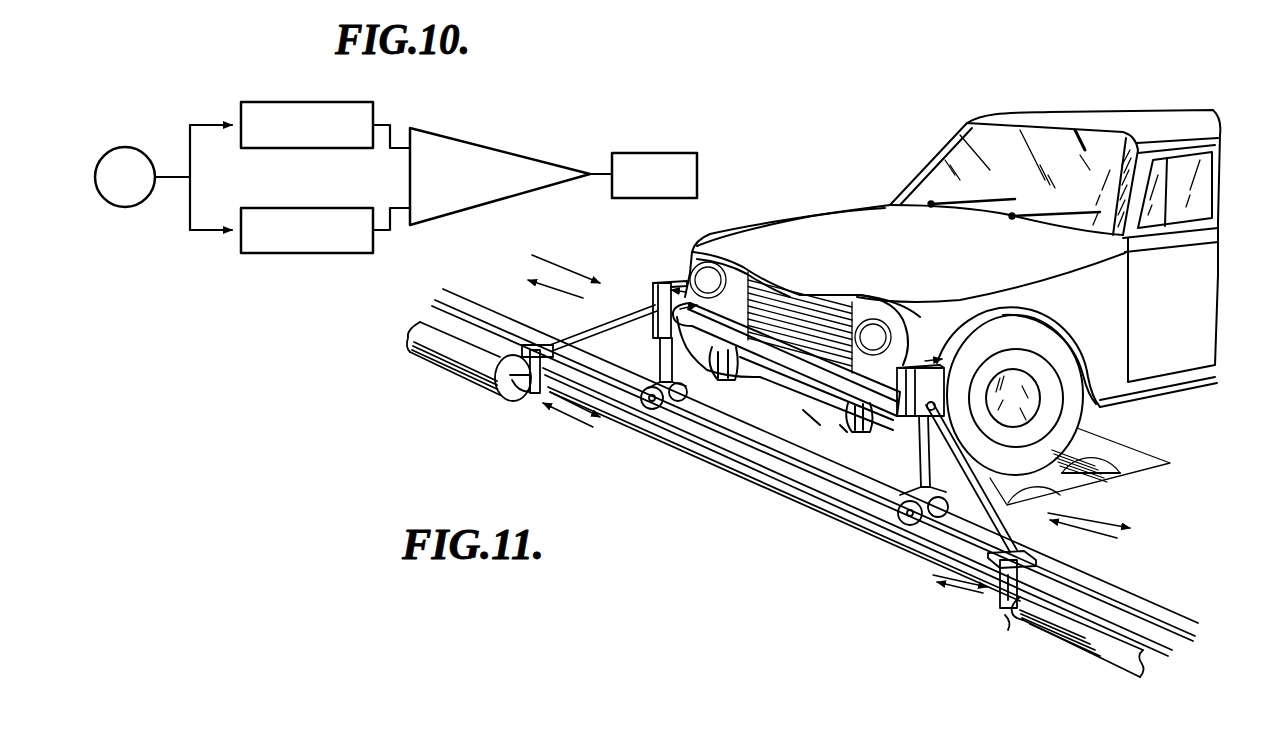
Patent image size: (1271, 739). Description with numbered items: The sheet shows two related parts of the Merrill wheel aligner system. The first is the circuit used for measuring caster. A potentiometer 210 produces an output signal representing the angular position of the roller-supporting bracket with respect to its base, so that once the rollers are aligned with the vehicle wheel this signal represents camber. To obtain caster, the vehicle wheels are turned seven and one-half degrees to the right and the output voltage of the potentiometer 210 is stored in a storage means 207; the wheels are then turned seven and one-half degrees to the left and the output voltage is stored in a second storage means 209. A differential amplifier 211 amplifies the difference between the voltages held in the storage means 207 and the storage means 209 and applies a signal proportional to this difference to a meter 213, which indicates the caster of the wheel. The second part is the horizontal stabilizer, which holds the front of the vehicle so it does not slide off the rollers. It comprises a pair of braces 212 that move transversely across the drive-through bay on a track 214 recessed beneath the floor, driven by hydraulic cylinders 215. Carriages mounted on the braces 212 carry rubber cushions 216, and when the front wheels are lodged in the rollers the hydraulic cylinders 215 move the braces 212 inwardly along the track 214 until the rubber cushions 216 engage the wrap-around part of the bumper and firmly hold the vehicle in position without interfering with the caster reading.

In FIG. 10, the storage means 207 is at (314, 105).
In FIG. 10, the storage means 209 is at (274, 249).
In FIG. 10, the potentiometer 210 is at (140, 153).
In FIG. 10, the differential amplifier 211 is at (476, 151).
In FIG. 10, the meter 213 is at (670, 153).
In FIG. 11, the braces 212 is at (656, 283).
In FIG. 11, the track 214 is at (716, 440).
In FIG. 11, the hydraulic cylinders 215 is at (488, 385).
In FIG. 11, the rubber cushions 216 is at (945, 363).